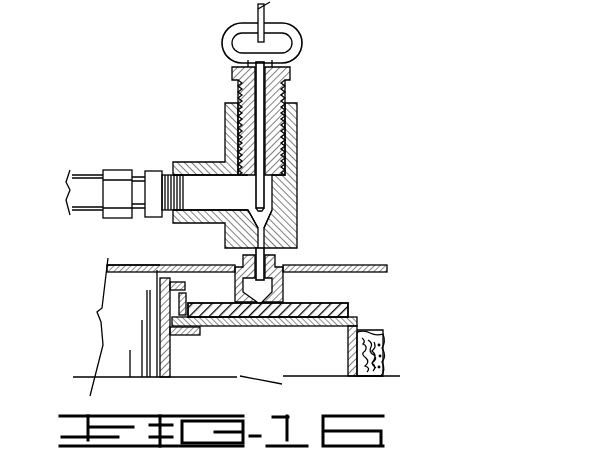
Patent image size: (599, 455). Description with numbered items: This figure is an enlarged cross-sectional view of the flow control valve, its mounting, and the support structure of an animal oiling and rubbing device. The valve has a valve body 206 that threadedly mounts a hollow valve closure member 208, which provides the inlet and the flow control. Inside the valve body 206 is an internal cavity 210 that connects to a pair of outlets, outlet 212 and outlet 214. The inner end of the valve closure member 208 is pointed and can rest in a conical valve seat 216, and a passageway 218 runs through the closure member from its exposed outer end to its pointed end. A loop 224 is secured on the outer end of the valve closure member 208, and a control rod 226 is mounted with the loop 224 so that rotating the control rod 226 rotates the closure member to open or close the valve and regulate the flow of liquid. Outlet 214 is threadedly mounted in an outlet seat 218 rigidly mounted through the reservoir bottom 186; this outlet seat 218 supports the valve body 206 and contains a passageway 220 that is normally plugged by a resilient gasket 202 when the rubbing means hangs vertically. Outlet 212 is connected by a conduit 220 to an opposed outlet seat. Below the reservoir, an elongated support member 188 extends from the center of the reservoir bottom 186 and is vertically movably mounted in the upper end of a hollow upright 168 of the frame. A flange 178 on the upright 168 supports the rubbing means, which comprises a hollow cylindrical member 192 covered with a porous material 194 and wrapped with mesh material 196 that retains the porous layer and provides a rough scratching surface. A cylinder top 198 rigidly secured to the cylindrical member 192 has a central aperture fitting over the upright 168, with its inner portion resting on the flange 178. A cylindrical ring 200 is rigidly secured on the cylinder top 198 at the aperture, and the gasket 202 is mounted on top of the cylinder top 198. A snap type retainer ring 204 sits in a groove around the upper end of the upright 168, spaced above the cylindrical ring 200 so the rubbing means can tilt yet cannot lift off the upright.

The hollow upright 168 is at (150, 378).
The flange 178 is at (177, 338).
The reservoir bottom 186 is at (366, 268).
The elongated support member 188 is at (125, 293).
The cylindrical member 192 is at (357, 330).
The porous material 194 is at (370, 335).
The mesh material 196 is at (383, 358).
The cylinder top 198 is at (317, 327).
The cylindrical ring 200 is at (177, 320).
The resilient gasket 202 is at (337, 303).
The snap type retainer ring 204 is at (180, 271).
The valve body 206 is at (290, 187).
The valve closure member 208 is at (280, 97).
The internal cavity 210 is at (213, 193).
The outlet 212 is at (166, 174).
The outlet 214 is at (283, 264).
The conical valve seat 216 is at (283, 228).
The outlet seat 218 is at (262, 82).
The passageway 220 is at (92, 185).
The loop 224 is at (224, 42).
The control rod 226 is at (264, 24).